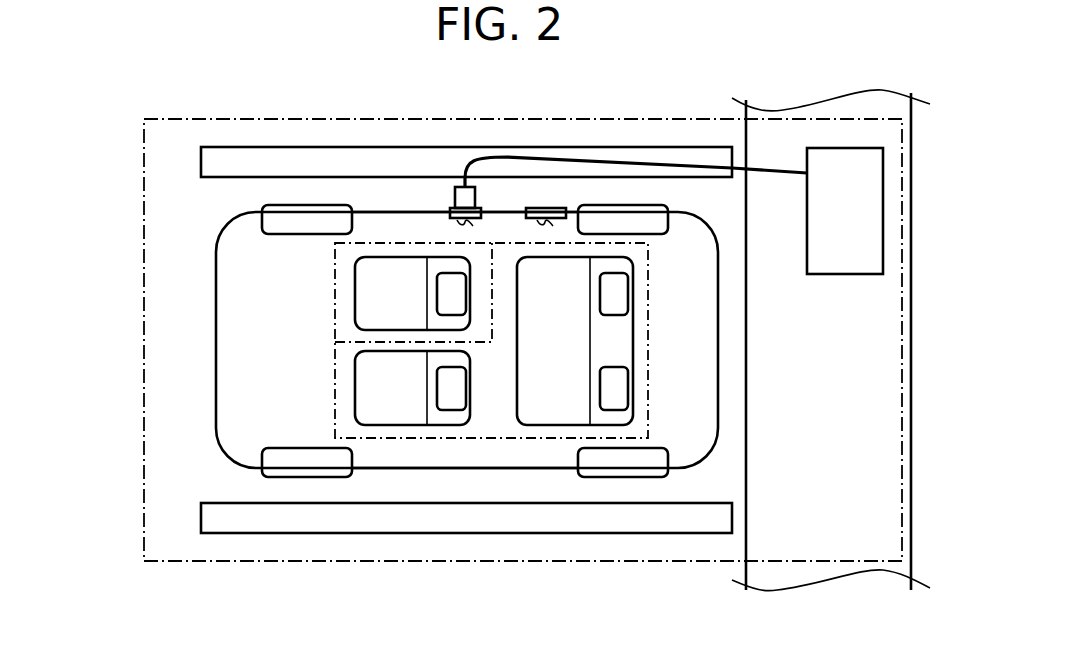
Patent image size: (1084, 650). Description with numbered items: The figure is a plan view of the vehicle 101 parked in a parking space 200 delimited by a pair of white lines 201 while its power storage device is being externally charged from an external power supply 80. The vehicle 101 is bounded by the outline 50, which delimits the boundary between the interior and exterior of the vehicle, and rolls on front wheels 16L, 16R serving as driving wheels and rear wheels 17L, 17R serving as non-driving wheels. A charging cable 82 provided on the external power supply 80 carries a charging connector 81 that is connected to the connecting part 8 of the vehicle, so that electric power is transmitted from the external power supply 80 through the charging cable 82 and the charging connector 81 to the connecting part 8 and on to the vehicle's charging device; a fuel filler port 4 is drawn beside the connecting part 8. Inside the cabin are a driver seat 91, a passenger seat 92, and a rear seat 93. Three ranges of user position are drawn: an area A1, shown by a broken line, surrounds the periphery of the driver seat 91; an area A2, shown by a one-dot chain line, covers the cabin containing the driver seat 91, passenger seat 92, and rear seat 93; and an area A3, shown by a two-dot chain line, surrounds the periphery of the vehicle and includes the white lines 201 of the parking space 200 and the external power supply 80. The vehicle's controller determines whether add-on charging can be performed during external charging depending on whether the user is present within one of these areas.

The parking space 200 is at (179, 341).
The white lines 201 is at (201, 158).
The vehicle 101 is at (205, 228).
The area A3 is at (462, 119).
The area A2 is at (335, 362).
The area A1 is at (478, 345).
The front wheel 16R is at (312, 205).
The rear wheel 17R is at (611, 205).
The front wheel 16L is at (312, 478).
The rear wheel 17L is at (610, 478).
The connecting part 8 is at (451, 205).
The charging connector 81 is at (478, 197).
The fuel filler port 4 is at (540, 207).
The charging cable 82 is at (626, 163).
The external power supply 80 is at (845, 275).
The outline of the vehicle 50 is at (718, 372).
The driver seat 91 is at (375, 297).
The passenger seat 92 is at (375, 391).
The rear seat 93 is at (560, 402).